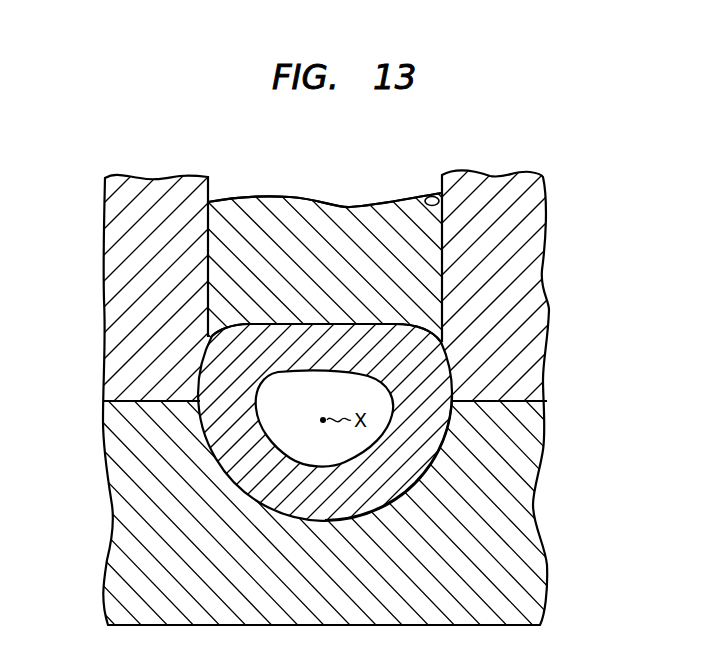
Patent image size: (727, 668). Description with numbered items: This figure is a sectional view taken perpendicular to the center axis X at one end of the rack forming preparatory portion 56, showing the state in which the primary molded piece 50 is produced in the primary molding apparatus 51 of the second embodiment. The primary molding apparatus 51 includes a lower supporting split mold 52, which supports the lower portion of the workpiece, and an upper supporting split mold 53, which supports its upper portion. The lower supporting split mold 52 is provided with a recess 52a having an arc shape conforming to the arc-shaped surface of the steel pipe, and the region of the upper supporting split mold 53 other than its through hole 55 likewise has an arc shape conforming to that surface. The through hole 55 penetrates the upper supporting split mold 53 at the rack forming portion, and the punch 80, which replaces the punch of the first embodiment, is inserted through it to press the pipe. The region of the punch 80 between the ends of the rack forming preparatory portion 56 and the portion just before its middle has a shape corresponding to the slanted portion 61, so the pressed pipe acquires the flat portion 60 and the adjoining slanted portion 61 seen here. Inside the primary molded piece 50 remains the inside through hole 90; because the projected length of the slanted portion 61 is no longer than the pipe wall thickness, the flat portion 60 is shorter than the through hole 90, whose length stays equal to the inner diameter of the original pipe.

The primary molded piece 50 is at (451, 452).
The primary molding apparatus 51 is at (556, 303).
The lower supporting split mold 52 is at (532, 590).
The recess 52a is at (405, 470).
The upper supporting split mold 53 is at (540, 371).
The through hole 55 is at (432, 196).
The rack forming preparatory portion 56 is at (355, 316).
The flat portion 60 is at (279, 316).
The slanted portion 61 is at (235, 320).
The punch 80 is at (311, 220).
The inside through hole 90 is at (278, 428).